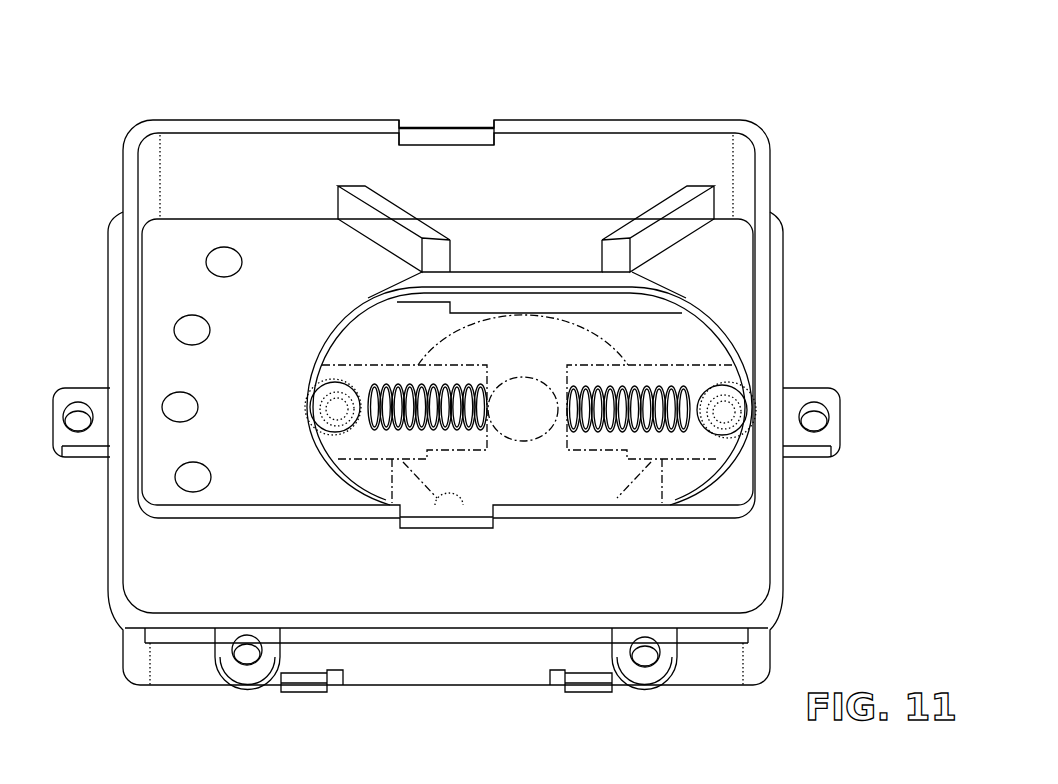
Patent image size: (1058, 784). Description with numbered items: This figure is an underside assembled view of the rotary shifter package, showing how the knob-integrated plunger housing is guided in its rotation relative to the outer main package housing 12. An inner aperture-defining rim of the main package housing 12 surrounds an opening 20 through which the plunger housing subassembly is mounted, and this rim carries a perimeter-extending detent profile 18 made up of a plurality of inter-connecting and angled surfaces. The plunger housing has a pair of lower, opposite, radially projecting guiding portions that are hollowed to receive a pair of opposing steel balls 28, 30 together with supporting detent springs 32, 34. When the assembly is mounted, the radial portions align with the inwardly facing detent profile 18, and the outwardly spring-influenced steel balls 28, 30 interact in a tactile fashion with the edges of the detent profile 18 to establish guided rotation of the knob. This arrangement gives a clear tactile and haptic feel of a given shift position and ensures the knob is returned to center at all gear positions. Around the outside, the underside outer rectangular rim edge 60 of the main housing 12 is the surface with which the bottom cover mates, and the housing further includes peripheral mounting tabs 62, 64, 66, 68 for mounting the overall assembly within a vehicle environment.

The main package housing 12 is at (143, 130).
The underside outer rectangular rim edge 60 is at (658, 132).
The detent profile 18 is at (657, 293).
The opening 20 is at (440, 508).
The steel ball 28 is at (325, 403).
The steel ball 30 is at (710, 397).
The detent spring 32 is at (387, 390).
The detent spring 34 is at (622, 392).
The mounting tab 62 is at (82, 397).
The mounting tab 64 is at (222, 658).
The mounting tab 66 is at (650, 668).
The mounting tab 68 is at (815, 397).